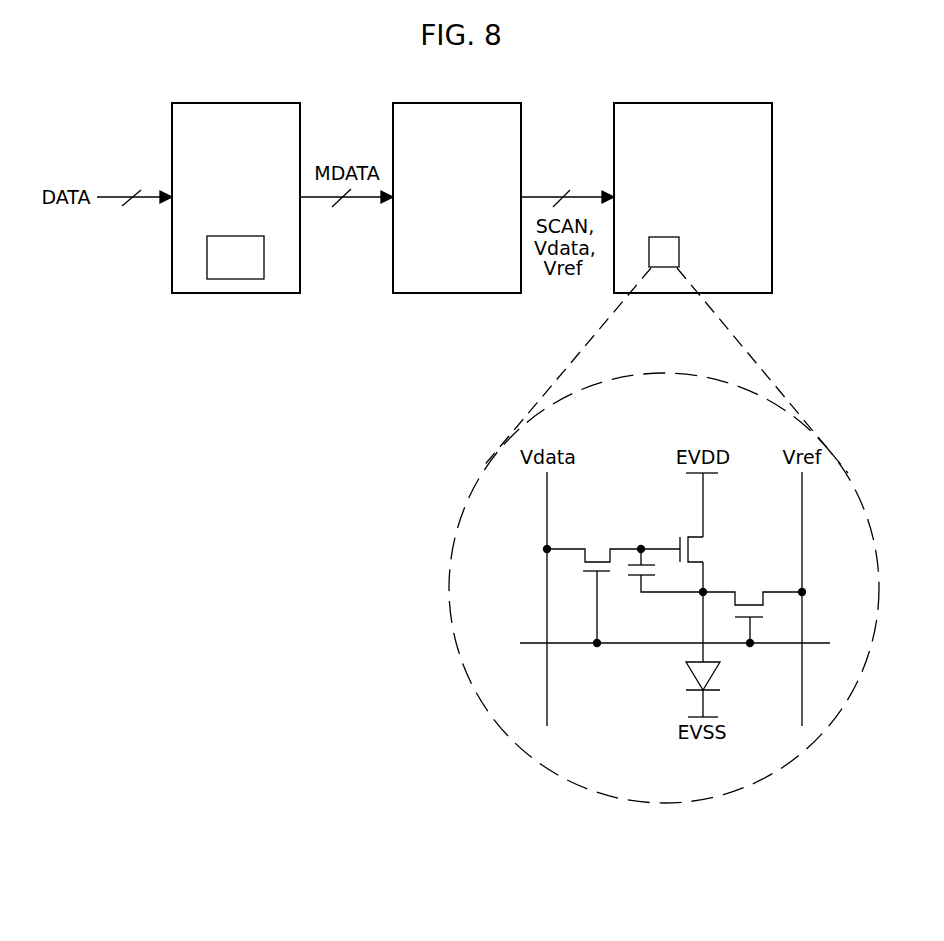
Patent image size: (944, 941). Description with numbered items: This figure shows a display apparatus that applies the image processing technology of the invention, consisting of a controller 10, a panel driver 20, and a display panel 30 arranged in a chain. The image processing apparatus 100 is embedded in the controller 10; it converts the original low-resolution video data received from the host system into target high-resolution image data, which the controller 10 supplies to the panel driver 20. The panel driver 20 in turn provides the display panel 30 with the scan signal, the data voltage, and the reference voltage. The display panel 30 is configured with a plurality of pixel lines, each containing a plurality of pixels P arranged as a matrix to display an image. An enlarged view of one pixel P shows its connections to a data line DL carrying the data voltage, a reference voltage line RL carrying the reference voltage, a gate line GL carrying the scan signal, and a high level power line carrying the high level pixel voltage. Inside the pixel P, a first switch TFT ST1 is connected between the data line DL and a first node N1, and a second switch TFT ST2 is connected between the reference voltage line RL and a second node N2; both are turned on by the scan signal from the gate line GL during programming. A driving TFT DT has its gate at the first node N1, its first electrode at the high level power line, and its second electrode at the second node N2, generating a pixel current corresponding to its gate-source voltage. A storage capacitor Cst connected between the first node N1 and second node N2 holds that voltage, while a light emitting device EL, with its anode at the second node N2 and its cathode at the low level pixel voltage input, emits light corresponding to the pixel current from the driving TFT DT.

The controller 10 is at (247, 211).
The image processing apparatus 100 is at (218, 270).
The panel driver 20 is at (468, 211).
The display panel 30 is at (704, 211).
The pixel P is at (664, 252).
The data line DL is at (547, 490).
The reference voltage line RL is at (802, 525).
The gate line GL is at (532, 648).
The first switch TFT ST1 is at (593, 585).
The second switch TFT ST2 is at (754, 608).
The driving TFT DT is at (684, 564).
The storage capacitor Cst is at (655, 574).
The first node N1 is at (642, 538).
The second node N2 is at (716, 604).
The light emitting device EL is at (716, 654).